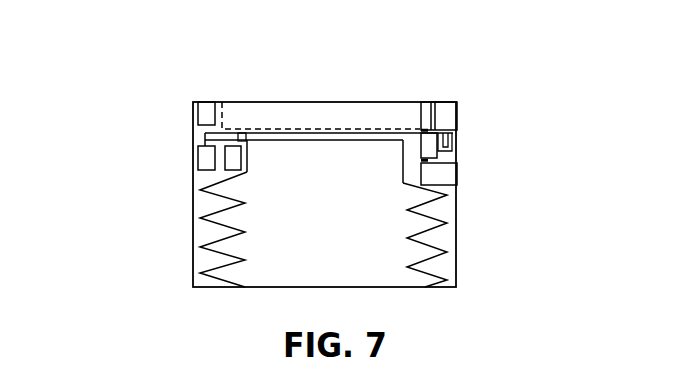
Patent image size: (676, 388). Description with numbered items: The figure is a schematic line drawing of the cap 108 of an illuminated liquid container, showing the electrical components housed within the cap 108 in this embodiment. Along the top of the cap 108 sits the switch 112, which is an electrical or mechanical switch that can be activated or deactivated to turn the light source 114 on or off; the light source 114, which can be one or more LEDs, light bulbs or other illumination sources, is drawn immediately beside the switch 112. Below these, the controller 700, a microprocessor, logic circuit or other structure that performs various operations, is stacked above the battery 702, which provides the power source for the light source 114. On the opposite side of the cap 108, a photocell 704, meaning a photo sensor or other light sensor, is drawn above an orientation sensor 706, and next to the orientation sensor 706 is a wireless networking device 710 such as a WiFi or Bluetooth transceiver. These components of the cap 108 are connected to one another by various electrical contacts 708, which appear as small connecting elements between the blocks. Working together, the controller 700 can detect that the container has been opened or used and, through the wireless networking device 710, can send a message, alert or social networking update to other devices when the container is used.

The cap 108 is at (540, 72).
The switch 112 is at (452, 109).
The light source 114 is at (432, 109).
The controller 700 is at (438, 158).
The battery 702 is at (443, 178).
The photocell 704 is at (188, 117).
The orientation sensor 706 is at (188, 166).
The electrical contacts 708 is at (411, 128).
The wireless networking device 710 is at (238, 149).